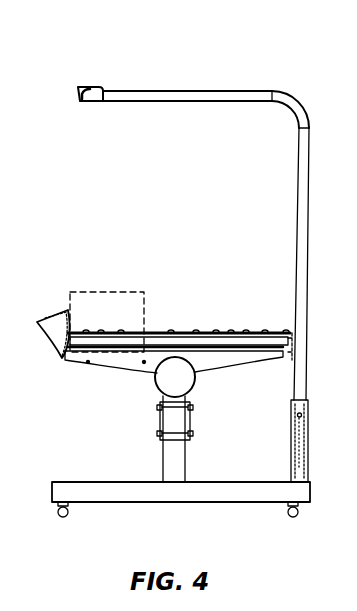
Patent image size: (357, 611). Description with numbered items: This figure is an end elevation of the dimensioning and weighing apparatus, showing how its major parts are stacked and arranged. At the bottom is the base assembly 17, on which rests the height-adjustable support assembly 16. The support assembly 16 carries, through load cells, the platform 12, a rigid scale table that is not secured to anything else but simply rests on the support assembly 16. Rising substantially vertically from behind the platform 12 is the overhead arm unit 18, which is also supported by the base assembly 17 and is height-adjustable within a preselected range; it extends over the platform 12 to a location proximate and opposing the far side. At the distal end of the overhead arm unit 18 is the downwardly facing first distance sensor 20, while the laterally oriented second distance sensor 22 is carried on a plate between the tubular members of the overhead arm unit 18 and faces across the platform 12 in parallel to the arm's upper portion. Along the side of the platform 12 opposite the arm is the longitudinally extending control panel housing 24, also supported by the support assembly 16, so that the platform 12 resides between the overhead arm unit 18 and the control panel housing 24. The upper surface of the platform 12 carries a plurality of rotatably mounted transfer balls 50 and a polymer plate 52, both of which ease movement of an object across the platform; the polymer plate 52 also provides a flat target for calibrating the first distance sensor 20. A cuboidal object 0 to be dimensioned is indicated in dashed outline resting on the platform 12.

The cuboidal object 0 is at (78, 292).
The platform 12 is at (123, 340).
The support assembly 16 is at (160, 422).
The base assembly 17 is at (112, 499).
The overhead arm unit 18 is at (222, 91).
The first distance sensor 20 is at (96, 104).
The second distance sensor 22 is at (290, 328).
The control panel housing 24 is at (38, 331).
The transfer balls 50 is at (245, 332).
The polymer plate 52 is at (88, 332).